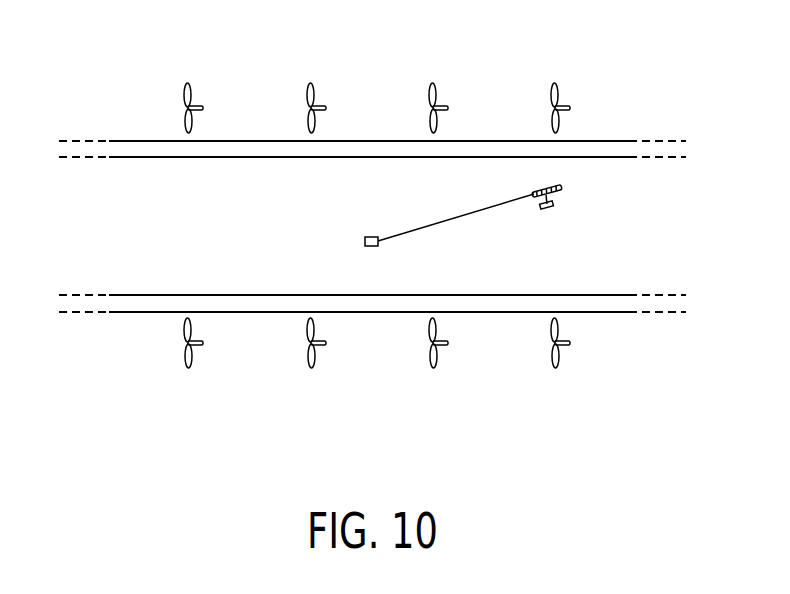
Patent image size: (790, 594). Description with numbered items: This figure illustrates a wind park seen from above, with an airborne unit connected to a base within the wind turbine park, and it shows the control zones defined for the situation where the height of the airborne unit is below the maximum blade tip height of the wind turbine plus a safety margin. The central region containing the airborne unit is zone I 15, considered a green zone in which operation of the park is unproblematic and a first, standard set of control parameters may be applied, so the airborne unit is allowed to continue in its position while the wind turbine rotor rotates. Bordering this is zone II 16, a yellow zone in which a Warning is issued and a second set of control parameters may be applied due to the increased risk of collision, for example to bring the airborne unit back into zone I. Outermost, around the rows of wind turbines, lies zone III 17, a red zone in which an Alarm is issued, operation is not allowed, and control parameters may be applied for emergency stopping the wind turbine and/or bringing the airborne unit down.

The zone I 15 is at (266, 241).
The zone II 16 is at (388, 141).
The zone III 17 is at (571, 45).
The zone I is at (635, 226).
The zone II is at (602, 146).
The zone III is at (500, 226).